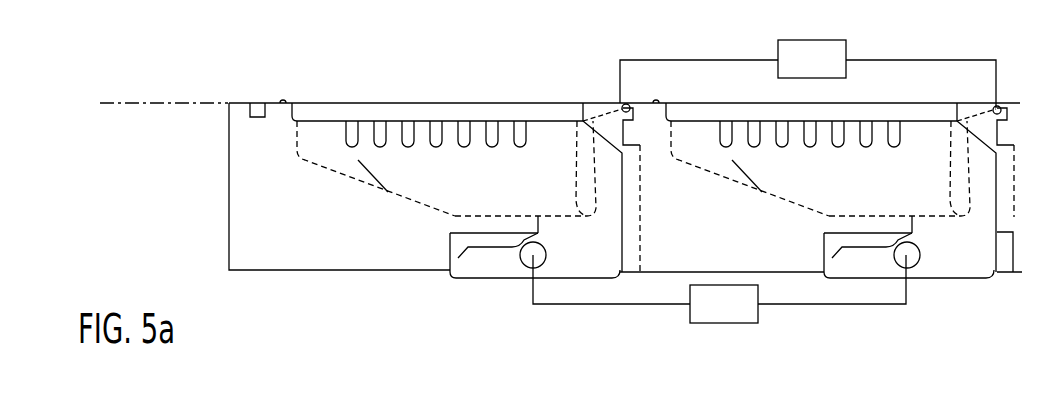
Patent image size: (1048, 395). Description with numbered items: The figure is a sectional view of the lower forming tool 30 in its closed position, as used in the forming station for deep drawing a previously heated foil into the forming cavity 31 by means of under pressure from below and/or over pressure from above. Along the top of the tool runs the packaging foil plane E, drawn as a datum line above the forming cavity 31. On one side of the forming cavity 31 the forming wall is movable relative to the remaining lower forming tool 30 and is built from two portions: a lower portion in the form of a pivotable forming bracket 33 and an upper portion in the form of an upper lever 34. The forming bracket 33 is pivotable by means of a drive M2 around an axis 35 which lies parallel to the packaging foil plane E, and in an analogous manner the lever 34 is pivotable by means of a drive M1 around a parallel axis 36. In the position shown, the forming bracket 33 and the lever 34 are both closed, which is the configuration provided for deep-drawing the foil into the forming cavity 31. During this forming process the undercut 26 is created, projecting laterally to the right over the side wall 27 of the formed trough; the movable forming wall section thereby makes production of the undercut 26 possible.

The undercut 26 is at (590, 200).
The side wall 27 is at (577, 175).
The lower forming tool 30 is at (243, 205).
The forming cavity 31 is at (425, 160).
The forming bracket 33 is at (570, 260).
The upper lever 34 is at (597, 110).
The axis 35 is at (528, 266).
The axis 36 is at (628, 106).
The packaging foil plane E is at (188, 101).
The drive M1 is at (808, 74).
The drive M2 is at (719, 289).